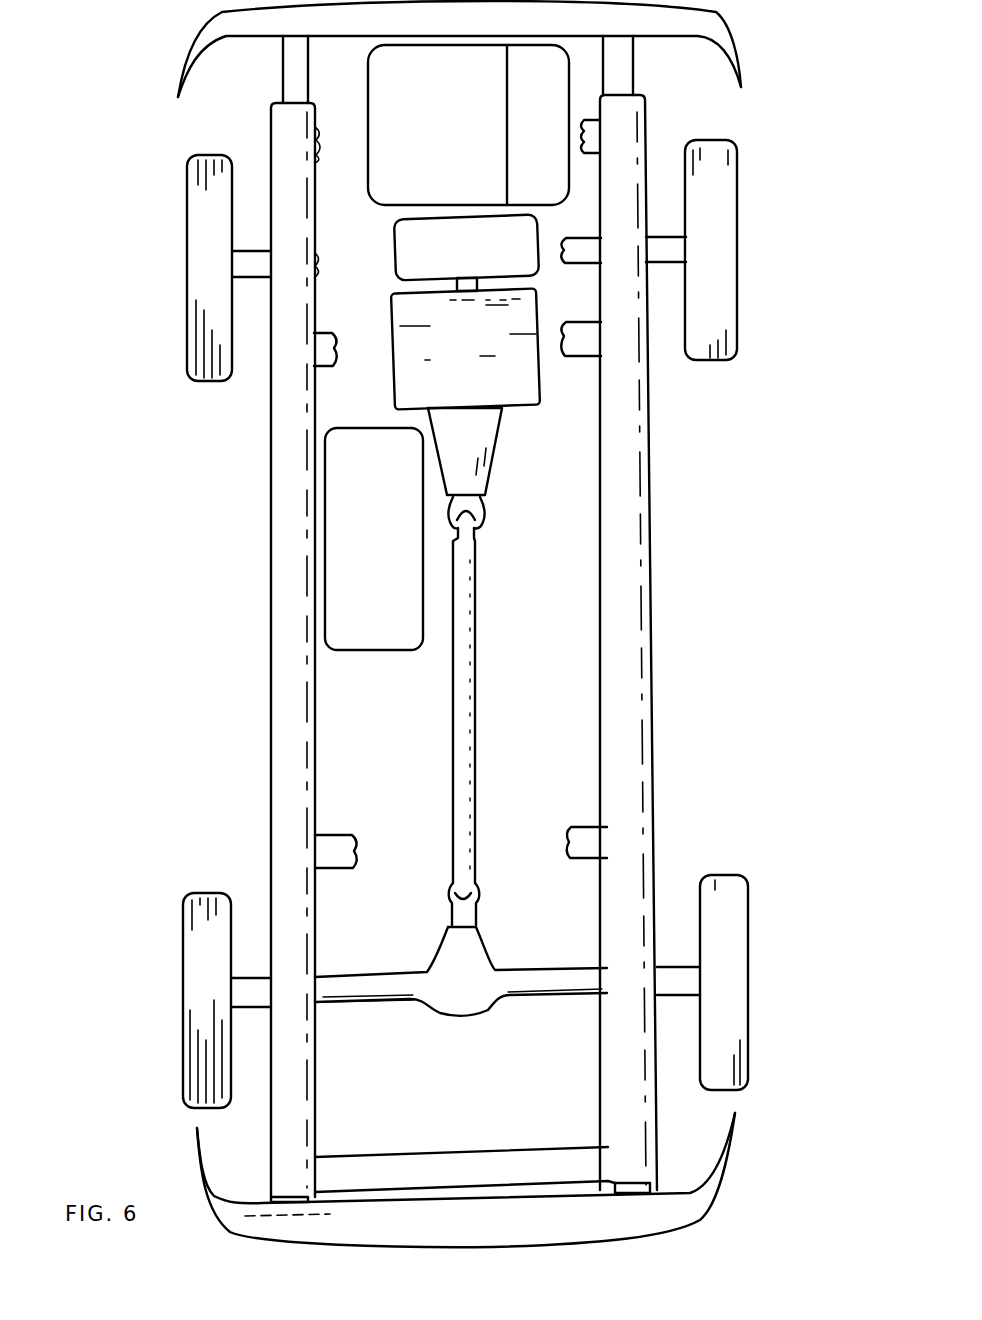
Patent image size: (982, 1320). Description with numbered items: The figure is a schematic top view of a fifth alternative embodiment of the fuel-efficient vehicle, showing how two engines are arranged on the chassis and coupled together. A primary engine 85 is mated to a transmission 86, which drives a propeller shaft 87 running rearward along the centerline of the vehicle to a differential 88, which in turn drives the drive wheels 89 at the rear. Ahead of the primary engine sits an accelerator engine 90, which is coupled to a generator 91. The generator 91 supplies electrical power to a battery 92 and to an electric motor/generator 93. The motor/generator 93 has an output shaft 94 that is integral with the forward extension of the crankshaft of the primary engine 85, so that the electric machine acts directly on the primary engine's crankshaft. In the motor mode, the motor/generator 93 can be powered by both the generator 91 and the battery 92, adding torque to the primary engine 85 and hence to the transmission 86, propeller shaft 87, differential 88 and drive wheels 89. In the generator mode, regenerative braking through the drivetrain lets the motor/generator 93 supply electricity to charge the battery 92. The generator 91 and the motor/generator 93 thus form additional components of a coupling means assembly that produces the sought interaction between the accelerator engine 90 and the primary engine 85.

The primary engine 85 is at (471, 361).
The transmission 86 is at (485, 440).
The propeller shaft 87 is at (475, 706).
The differential 88 is at (441, 998).
The drive wheels 89 is at (182, 949).
The accelerator engine 90 is at (457, 158).
The generator 91 is at (547, 158).
The battery 92 is at (396, 565).
The electric motor/generator 93 is at (471, 260).
The output shaft 94 is at (478, 281).